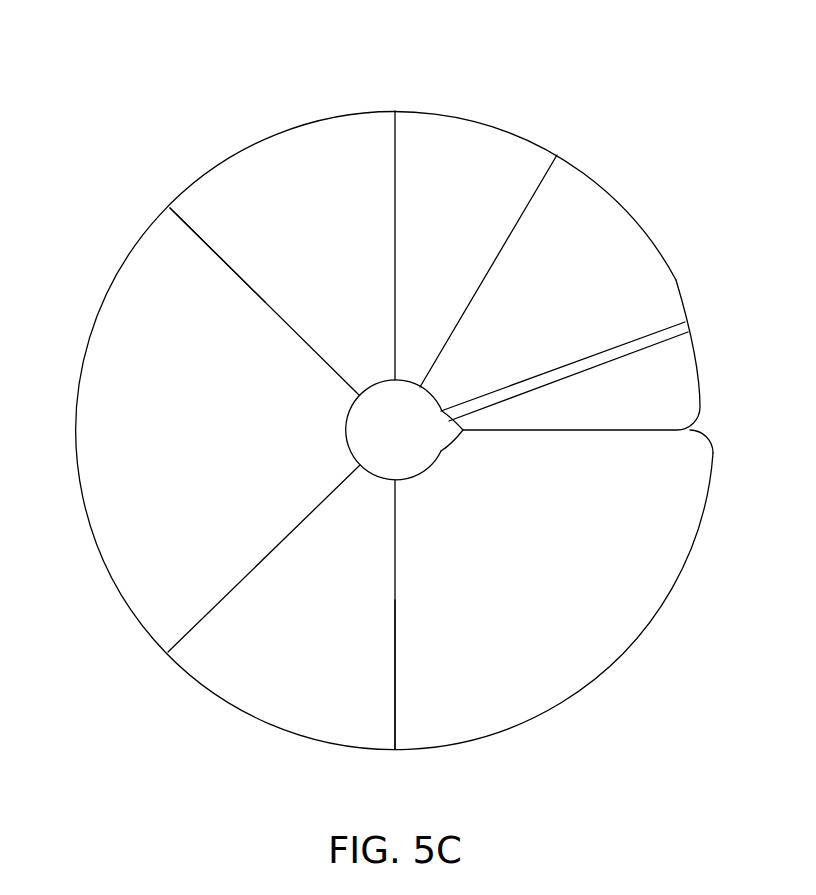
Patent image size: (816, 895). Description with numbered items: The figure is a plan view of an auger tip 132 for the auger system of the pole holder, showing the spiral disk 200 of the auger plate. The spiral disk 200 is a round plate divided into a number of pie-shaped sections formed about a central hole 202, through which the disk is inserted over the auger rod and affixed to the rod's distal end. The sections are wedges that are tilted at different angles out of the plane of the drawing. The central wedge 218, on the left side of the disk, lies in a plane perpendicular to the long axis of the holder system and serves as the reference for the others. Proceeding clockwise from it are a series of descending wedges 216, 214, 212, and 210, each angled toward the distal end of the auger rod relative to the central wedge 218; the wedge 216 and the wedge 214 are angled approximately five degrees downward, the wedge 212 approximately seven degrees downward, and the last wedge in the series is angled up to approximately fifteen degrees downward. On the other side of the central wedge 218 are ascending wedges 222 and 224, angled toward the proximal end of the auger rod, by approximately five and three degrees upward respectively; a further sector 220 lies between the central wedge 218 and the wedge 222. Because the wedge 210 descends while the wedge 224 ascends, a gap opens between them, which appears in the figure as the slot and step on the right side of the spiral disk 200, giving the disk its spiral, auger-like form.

The rotor assembly 132 is at (636, 51).
The spiral disk 200 is at (683, 573).
The central bore 202 is at (363, 425).
The wedge 210 is at (683, 377).
The wedge 212 is at (633, 257).
The wedge 214 is at (467, 143).
The wedge 216 is at (278, 150).
The central wedge 218 is at (132, 297).
The sector 220 is at (110, 520).
The wedge 222 is at (302, 712).
The wedge 224 is at (610, 638).